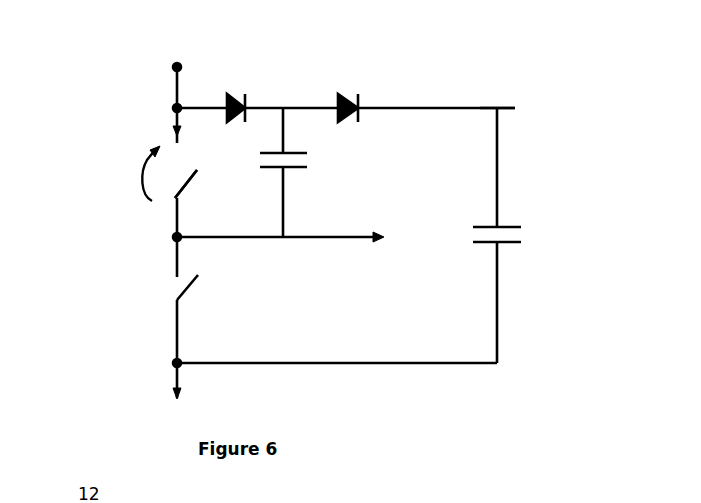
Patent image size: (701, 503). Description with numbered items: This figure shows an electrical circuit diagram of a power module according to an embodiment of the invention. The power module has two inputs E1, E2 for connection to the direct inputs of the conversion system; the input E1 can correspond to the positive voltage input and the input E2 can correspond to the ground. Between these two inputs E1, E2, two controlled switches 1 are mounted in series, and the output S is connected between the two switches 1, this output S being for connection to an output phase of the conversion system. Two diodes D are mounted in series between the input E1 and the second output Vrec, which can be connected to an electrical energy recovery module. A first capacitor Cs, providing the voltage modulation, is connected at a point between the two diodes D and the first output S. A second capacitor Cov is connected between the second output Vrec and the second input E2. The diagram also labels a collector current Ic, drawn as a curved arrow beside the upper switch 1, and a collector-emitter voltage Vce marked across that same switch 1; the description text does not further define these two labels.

The controlled switch 1 is at (160, 199).
The input E1 is at (139, 96).
The input E2 is at (145, 379).
The diode D is at (298, 86).
The first capacitor Cs is at (307, 172).
The second capacitor Cov is at (527, 235).
The second output Vrec is at (526, 104).
The output S is at (278, 256).
The collector current Ic is at (147, 163).
The collector-emitter voltage Vce is at (135, 179).